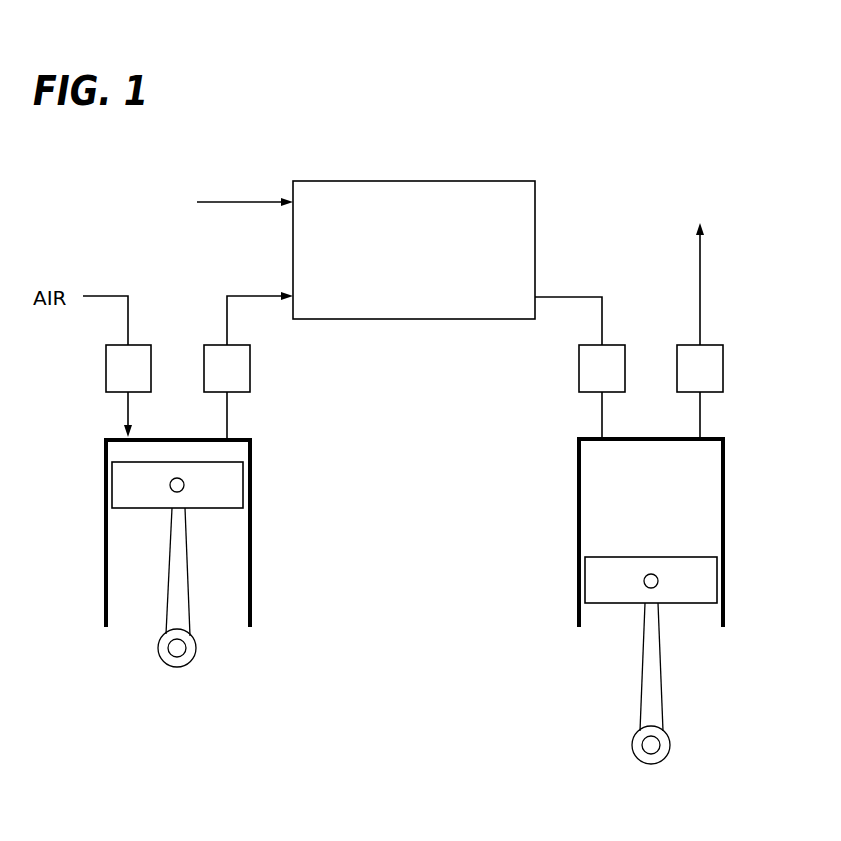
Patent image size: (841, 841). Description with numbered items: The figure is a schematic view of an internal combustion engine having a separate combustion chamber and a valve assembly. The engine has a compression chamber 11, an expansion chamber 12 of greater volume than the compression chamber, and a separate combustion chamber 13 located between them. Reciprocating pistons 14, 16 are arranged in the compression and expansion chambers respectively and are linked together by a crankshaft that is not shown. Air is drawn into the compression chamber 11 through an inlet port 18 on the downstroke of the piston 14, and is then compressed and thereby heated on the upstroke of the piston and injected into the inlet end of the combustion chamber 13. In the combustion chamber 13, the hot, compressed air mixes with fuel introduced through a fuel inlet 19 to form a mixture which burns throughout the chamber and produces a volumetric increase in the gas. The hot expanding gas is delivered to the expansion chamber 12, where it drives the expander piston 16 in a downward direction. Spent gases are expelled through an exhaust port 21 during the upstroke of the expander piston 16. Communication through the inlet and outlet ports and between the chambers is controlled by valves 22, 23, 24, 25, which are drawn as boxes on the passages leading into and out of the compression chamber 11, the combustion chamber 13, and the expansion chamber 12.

The compression chamber 11 is at (112, 570).
The expansion chamber 12 is at (587, 502).
The combustion chamber 13 is at (407, 190).
The piston 14 is at (235, 480).
The expander piston 16 is at (708, 588).
The inlet port 18 is at (120, 437).
The fuel inlet 19 is at (247, 200).
The exhaust port 21 is at (703, 420).
The valve 22 is at (115, 378).
The valve 23 is at (240, 378).
The valve 24 is at (585, 370).
The valve 25 is at (718, 363).